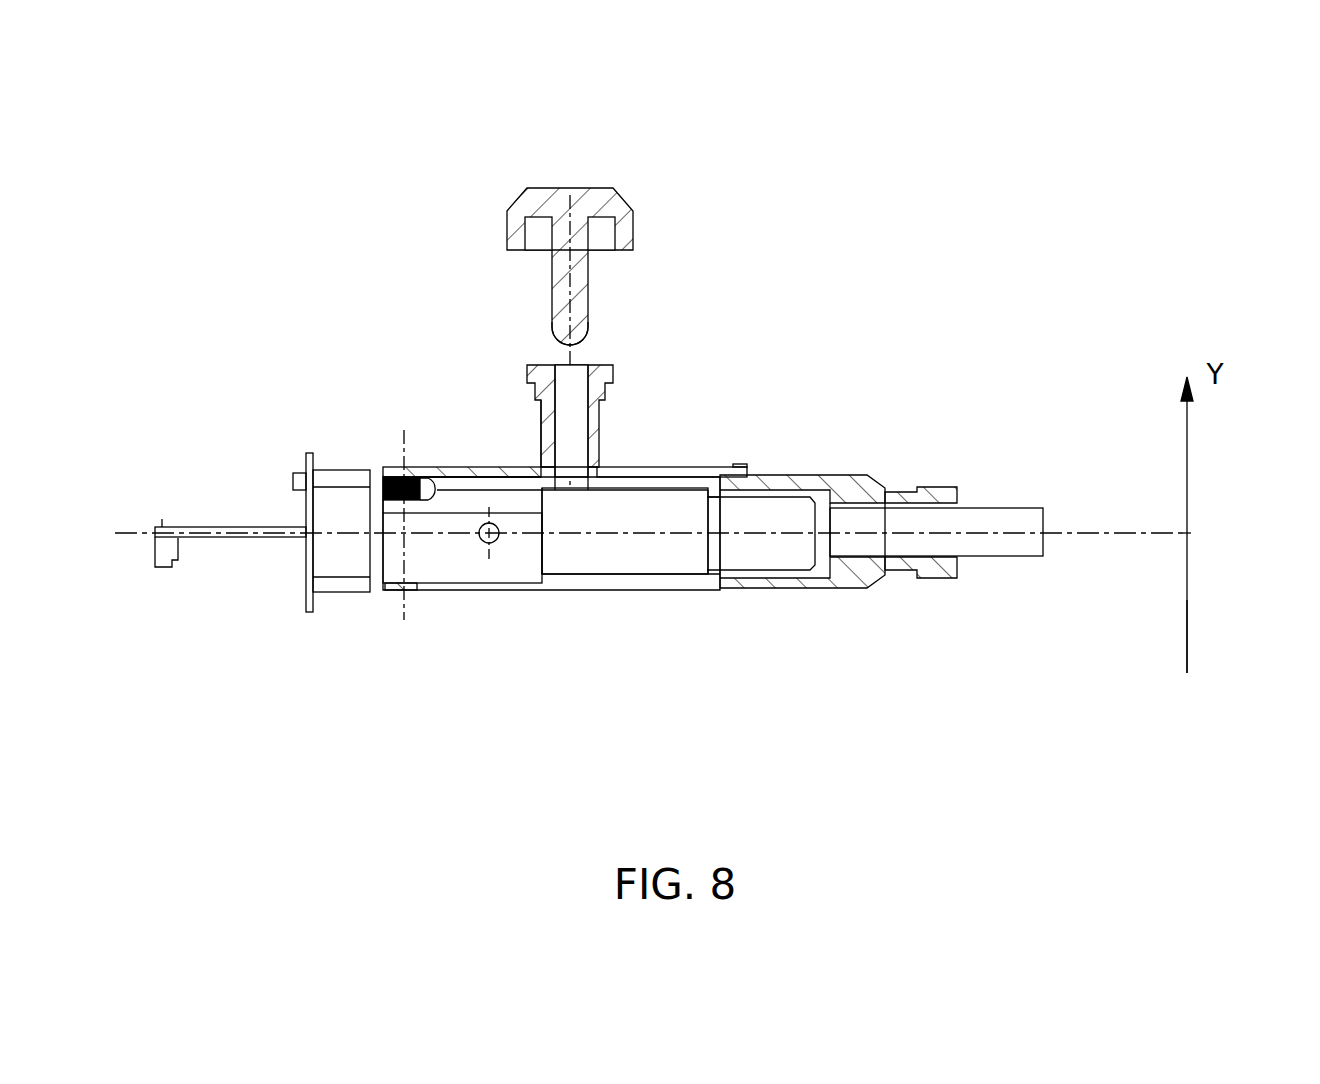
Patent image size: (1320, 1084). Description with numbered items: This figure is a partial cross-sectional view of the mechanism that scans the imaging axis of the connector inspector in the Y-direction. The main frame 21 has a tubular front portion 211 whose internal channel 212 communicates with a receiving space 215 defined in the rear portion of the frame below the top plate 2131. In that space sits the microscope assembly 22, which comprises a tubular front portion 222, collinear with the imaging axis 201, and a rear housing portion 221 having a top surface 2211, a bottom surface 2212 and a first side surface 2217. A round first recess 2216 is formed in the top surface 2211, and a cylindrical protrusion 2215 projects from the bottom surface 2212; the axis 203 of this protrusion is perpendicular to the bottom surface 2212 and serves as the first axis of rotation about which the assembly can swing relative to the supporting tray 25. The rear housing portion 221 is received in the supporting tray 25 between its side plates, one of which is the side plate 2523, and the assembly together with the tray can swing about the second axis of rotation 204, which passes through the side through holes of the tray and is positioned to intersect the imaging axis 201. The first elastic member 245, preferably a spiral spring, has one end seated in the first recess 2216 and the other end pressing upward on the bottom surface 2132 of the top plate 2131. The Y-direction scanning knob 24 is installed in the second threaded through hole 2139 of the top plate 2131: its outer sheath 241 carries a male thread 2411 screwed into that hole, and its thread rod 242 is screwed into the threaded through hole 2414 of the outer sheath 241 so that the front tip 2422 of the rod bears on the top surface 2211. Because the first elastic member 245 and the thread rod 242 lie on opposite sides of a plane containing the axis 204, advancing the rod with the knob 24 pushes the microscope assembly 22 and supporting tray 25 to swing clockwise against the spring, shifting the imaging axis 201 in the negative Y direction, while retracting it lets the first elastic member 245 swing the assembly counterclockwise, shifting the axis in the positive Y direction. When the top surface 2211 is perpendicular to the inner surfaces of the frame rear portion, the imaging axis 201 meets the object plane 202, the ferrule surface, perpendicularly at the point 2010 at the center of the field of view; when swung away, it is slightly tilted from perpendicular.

The Y-direction scanning knob 24 is at (568, 188).
The thread rod 242 is at (588, 287).
The front tip 2422 is at (556, 342).
The outer sheath 241 is at (543, 358).
The male thread 2411 is at (649, 389).
The threaded through hole 2414 is at (590, 365).
The second threaded through hole 2139 is at (620, 465).
The main frame 21 is at (757, 467).
The top plate 2131 is at (435, 463).
The bottom surface 2132 is at (490, 470).
The receiving space 215 is at (677, 467).
The first elastic member 245 is at (397, 470).
The bottom surface 2212 is at (553, 578).
The first side surface 2217 is at (588, 545).
The top surface 2211 is at (570, 488).
The second axis of rotation 204 is at (452, 590).
The side plate 2523 is at (435, 583).
The first axis of rotation 203 is at (403, 615).
The supporting tray 25 is at (489, 540).
The rear housing portion 221 is at (670, 550).
The microscope assembly 22 is at (745, 553).
The internal channel 212 is at (883, 503).
The tubular front portion 211 is at (887, 575).
The tubular front portion 222 is at (975, 545).
The imaging axis 201 is at (1045, 513).
The point 2010 is at (1187, 532).
The object plane 202 is at (1187, 635).
The first recess 2216 is at (377, 480).
The cylindrical protrusion 2215 is at (390, 590).